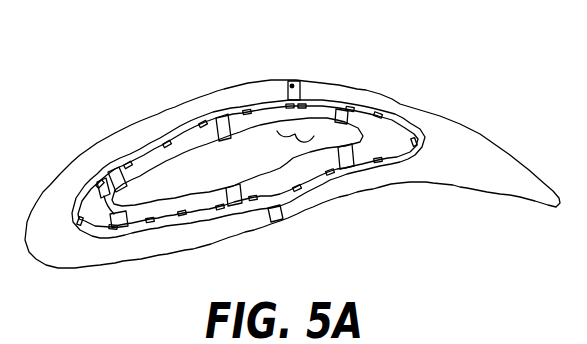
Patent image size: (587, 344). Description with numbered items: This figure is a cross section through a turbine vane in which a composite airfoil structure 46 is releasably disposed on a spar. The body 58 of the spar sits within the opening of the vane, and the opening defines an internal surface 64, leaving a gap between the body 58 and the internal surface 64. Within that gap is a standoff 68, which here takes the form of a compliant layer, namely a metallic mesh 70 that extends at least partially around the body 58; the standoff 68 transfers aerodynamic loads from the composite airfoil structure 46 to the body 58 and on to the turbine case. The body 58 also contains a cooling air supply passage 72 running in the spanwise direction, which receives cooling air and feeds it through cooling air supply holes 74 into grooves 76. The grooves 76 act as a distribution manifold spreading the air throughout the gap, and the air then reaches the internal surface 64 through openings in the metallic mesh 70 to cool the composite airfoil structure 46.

The composite airfoil structure 46 is at (452, 118).
The body 58 is at (200, 122).
The internal surface 64 is at (411, 166).
The standoff 68 is at (286, 82).
The metallic mesh 70 is at (140, 232).
The cooling air supply passage 72 is at (300, 133).
The cooling air supply holes 74 is at (273, 205).
The grooves 76 is at (104, 187).